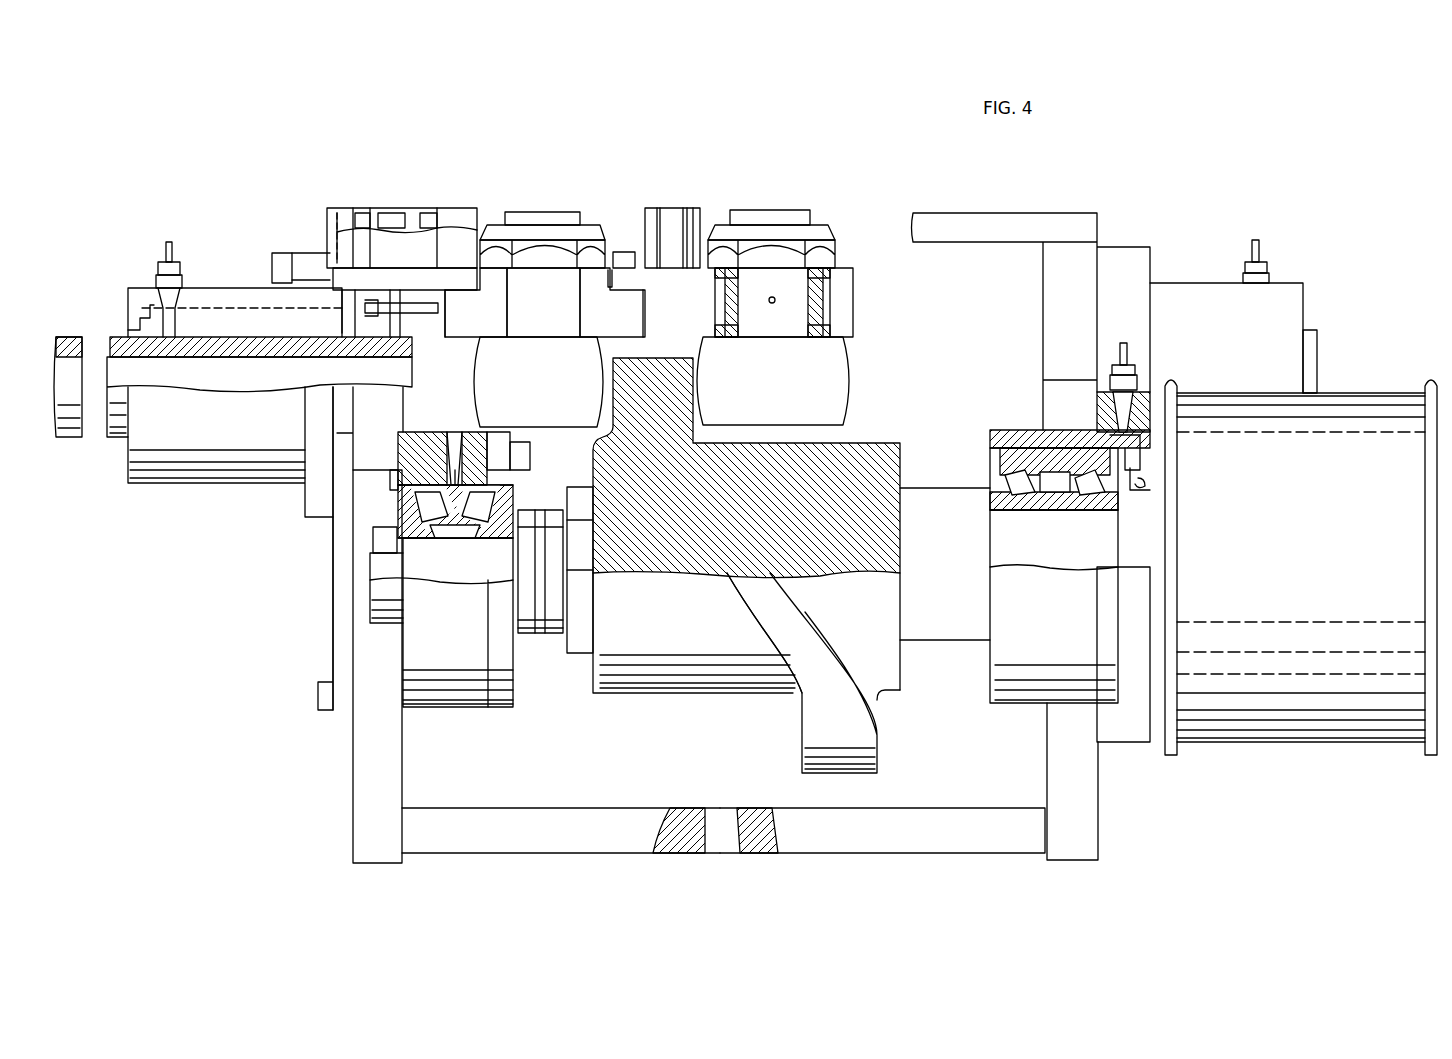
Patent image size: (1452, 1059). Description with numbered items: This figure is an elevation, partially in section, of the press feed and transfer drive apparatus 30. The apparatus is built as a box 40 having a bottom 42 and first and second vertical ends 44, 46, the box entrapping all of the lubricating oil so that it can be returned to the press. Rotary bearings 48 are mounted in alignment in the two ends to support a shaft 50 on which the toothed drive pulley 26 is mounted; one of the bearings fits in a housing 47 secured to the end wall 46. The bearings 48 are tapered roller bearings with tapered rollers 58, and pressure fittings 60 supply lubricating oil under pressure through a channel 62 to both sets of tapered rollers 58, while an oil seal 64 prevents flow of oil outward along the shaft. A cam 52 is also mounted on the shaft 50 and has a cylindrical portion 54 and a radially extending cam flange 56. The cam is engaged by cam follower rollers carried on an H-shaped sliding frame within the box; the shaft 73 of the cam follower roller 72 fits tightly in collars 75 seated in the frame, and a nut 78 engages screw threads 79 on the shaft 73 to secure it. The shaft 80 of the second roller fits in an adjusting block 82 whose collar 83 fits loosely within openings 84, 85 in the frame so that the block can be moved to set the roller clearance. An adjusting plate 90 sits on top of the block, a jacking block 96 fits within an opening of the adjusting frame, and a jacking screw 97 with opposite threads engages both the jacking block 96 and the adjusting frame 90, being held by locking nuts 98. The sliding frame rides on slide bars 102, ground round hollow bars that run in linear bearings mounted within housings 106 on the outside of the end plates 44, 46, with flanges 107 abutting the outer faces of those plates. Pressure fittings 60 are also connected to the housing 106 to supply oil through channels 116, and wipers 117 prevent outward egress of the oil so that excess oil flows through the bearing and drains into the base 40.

The pulley 26 is at (1432, 536).
The feed and transfer drive apparatus 30 is at (338, 782).
The box 40 is at (552, 858).
The bottom 42 is at (995, 855).
The first vertical end 44 is at (362, 748).
The second vertical end 46 is at (1090, 808).
The housing 47 is at (1130, 718).
The rotary bearings 48 is at (460, 690).
The shaft 50 is at (940, 618).
The cam 52 is at (680, 700).
The cylindrical portion 54 is at (758, 672).
The cam flange 56 is at (618, 437).
The tapered rollers 58 is at (500, 525).
The pressure fittings 60 is at (180, 280).
The channel 62 is at (1060, 432).
The oil seal 64 is at (725, 850).
The cam follower roller 72 is at (756, 368).
The shaft 73 is at (808, 303).
The collars 75 is at (738, 288).
The nut 78 is at (825, 255).
The screw threads 79 is at (795, 220).
The shaft 80 is at (558, 313).
The adjusting block 82 is at (464, 320).
The collar 83 is at (607, 275).
The opening 84 is at (643, 318).
The opening 85 is at (620, 276).
The adjusting plate 90 is at (348, 210).
The jacking block 96 is at (458, 212).
The jacking screw 97 is at (392, 216).
The locking nuts 98 is at (362, 213).
The slide bars 102 is at (76, 337).
The housings 106 is at (270, 470).
The flanges 107 is at (322, 513).
The channels 116 is at (163, 318).
The wipers 117 is at (128, 330).